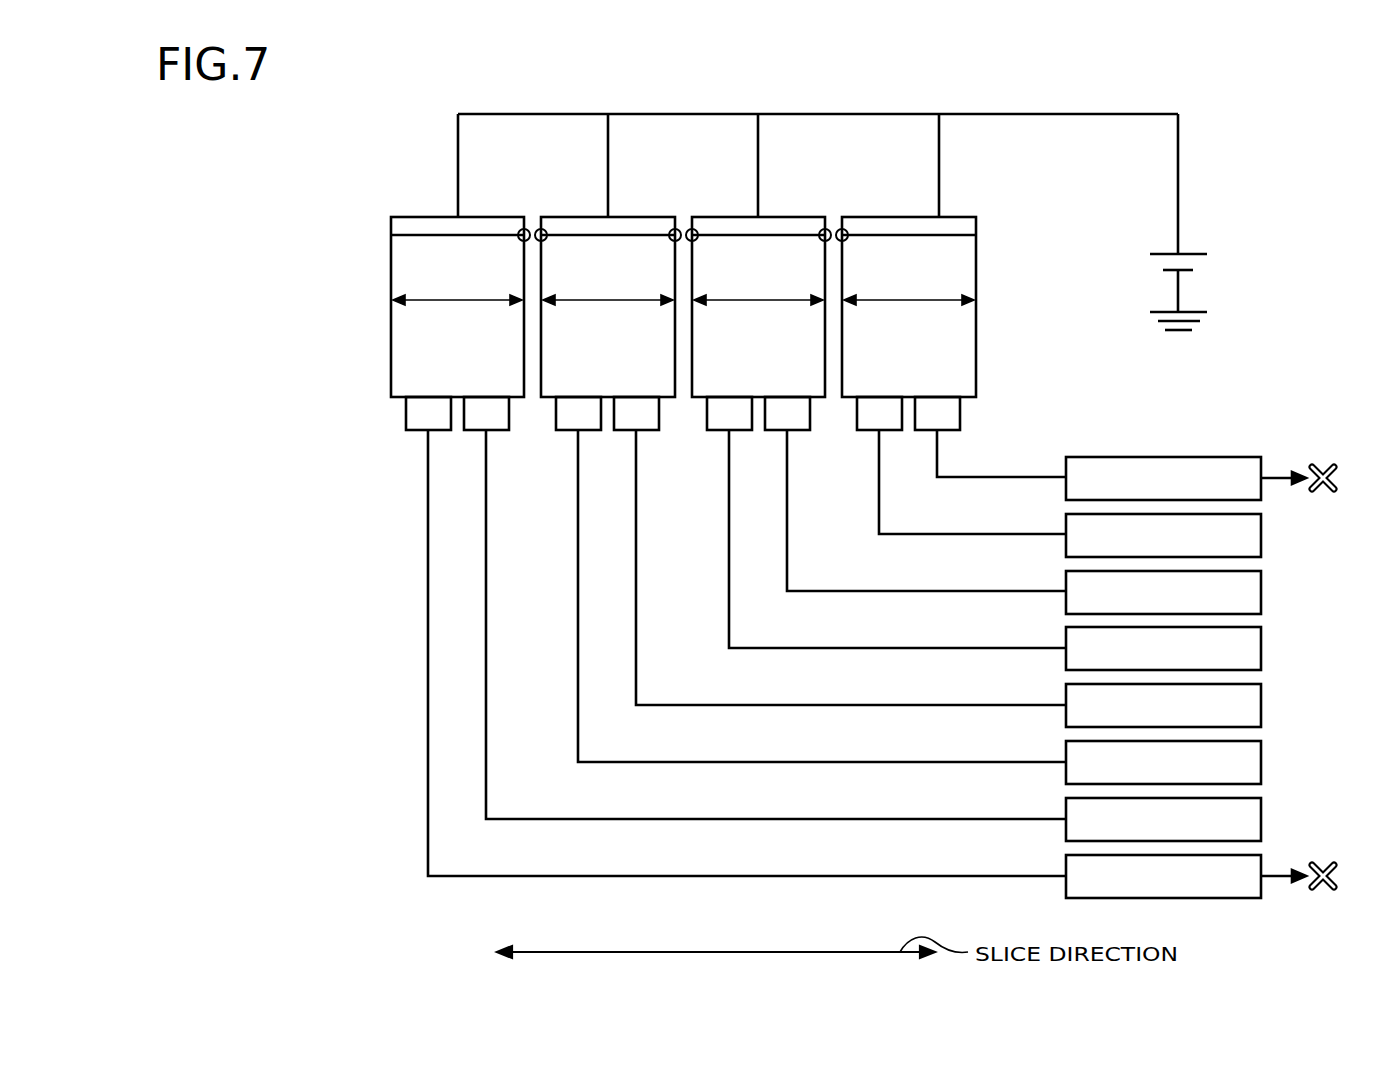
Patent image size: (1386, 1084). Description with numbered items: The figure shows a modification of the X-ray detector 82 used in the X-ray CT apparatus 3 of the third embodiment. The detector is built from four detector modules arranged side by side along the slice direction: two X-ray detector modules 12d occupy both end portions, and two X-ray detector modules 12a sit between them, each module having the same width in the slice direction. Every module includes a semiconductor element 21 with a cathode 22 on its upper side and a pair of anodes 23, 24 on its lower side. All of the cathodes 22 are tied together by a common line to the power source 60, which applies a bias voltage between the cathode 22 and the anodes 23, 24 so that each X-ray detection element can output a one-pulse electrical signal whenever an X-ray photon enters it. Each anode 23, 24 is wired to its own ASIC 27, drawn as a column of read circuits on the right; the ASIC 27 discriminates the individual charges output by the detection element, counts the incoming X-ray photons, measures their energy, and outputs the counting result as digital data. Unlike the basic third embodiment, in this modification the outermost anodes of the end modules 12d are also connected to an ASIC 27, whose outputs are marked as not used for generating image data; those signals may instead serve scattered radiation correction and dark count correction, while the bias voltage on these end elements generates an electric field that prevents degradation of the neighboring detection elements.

The X-ray CT apparatus 3 is at (1312, 84).
The X-ray detector 82 is at (1272, 151).
The power source 60 is at (1193, 253).
The semiconductor element 21 is at (391, 346).
The cathode 22 is at (405, 217).
The anode 23 is at (405, 410).
The anode 24 is at (476, 431).
The ASIC 27 is at (1262, 465).
The X-ray detector module 12a is at (649, 197).
The X-ray detector module 12d is at (488, 190).